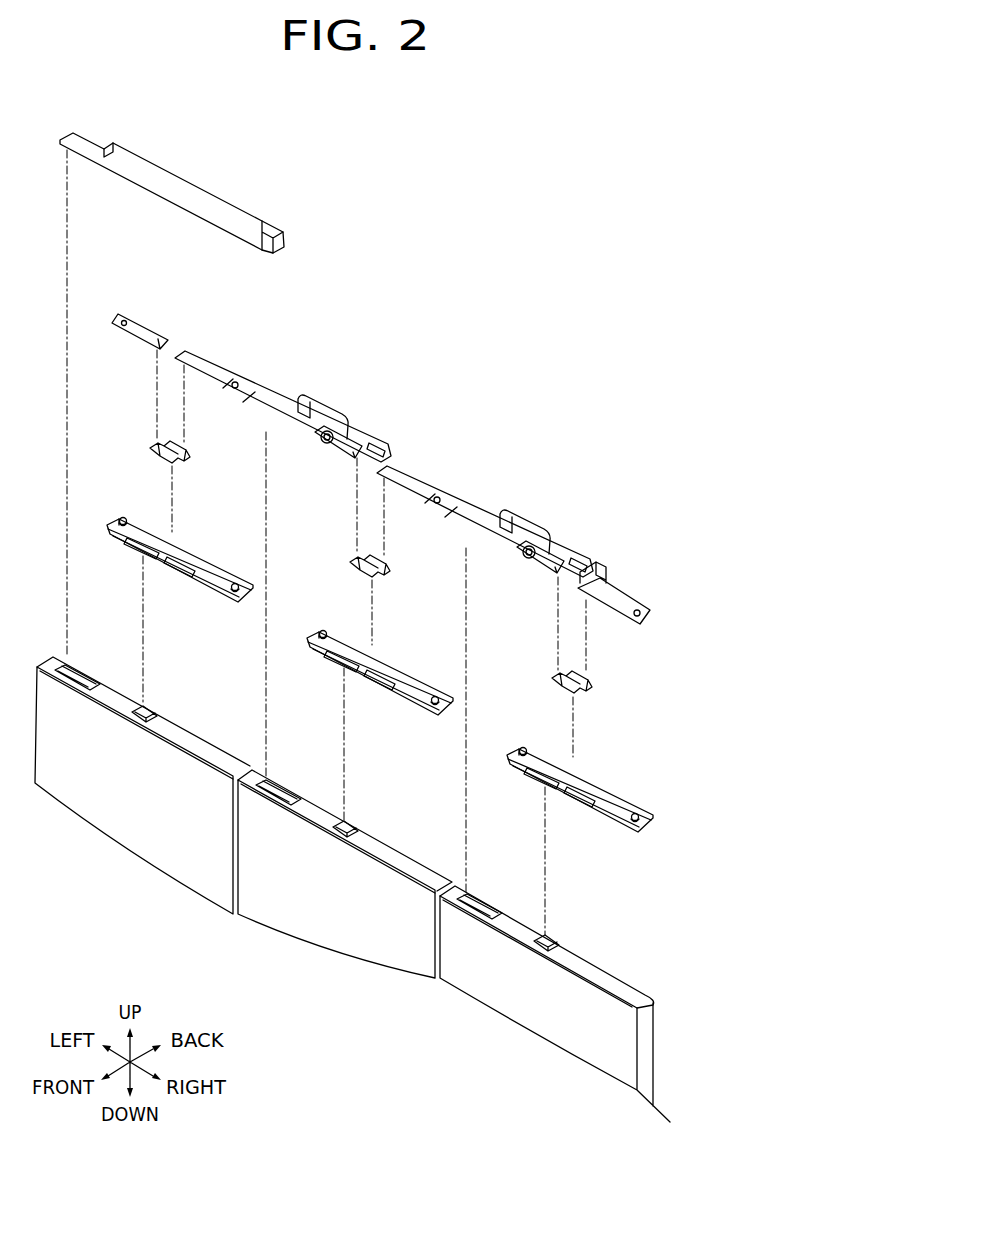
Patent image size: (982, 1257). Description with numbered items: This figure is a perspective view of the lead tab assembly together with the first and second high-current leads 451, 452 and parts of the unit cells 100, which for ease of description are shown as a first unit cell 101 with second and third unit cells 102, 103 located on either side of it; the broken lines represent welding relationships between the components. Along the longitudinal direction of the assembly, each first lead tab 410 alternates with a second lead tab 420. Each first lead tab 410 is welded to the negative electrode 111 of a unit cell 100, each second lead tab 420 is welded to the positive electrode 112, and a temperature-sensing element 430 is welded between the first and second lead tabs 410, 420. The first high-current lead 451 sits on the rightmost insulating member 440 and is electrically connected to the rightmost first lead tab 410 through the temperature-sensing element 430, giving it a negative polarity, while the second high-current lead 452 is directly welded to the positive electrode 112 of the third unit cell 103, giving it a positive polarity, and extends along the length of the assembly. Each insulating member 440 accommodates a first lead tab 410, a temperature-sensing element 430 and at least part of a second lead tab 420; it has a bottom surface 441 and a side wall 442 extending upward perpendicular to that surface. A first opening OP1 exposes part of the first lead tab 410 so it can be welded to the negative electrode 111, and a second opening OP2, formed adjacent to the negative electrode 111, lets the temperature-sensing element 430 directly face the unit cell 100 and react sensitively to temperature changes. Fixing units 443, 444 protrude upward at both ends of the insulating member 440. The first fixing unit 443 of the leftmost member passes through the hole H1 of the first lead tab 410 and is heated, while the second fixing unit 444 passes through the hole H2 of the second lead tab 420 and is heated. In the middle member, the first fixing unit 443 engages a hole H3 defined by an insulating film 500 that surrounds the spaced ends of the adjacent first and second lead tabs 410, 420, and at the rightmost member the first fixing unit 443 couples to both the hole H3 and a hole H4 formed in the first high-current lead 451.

The unit cell 100 is at (352, 873).
The first unit cell 101 is at (313, 902).
The second unit cell 102 is at (508, 997).
The third unit cell 103 is at (103, 809).
The negative electrode 111 is at (150, 710).
The positive electrode 112 is at (80, 675).
The first lead tab 410 is at (143, 331).
The second lead tab 420 is at (278, 410).
The temperature-sensing element 430 is at (393, 558).
The insulating member 440 is at (368, 663).
The bottom surface 441 is at (376, 699).
The side wall 442 is at (379, 663).
The first fixing unit 443 is at (308, 609).
The second fixing unit 444 is at (437, 677).
The first high-current lead 451 is at (618, 600).
The second high-current lead 452 is at (192, 205).
The insulating film 500 is at (318, 447).
The hole H1 is at (124, 320).
The hole H2 is at (235, 381).
The hole H3 is at (329, 431).
The hole H4 is at (644, 611).
The first opening OP1 is at (321, 668).
The second opening OP2 is at (346, 693).